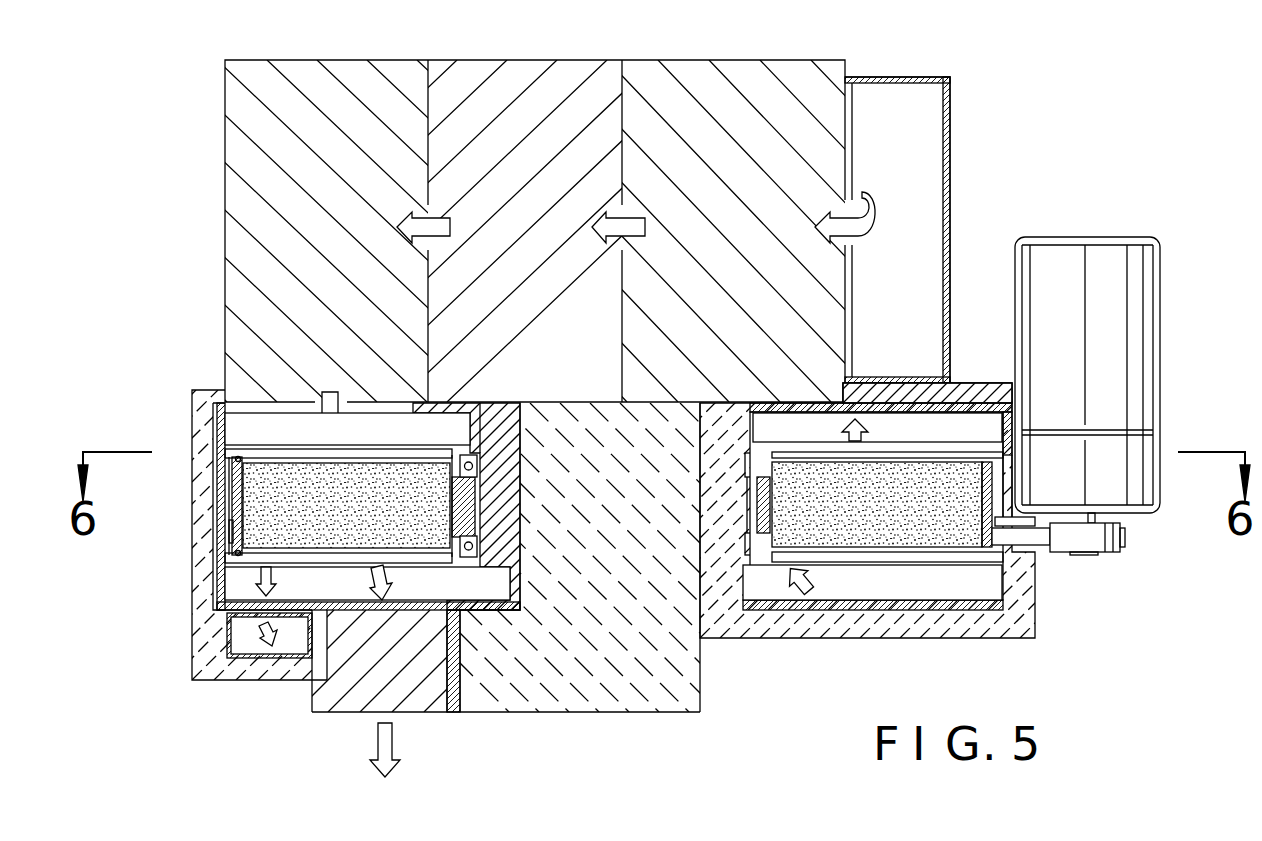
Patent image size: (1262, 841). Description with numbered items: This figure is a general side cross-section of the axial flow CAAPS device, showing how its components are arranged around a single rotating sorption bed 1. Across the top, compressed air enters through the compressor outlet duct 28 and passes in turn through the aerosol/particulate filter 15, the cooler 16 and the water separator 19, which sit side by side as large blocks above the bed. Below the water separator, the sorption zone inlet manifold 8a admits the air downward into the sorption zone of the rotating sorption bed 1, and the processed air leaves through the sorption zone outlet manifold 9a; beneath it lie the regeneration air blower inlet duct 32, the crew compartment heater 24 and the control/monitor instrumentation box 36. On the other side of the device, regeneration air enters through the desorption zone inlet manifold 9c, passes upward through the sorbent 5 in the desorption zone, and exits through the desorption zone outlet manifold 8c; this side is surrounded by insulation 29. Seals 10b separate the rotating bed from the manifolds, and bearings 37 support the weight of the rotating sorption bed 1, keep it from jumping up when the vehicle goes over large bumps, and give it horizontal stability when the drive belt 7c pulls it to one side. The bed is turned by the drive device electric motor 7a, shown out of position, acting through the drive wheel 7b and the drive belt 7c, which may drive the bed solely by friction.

The water separator 19 is at (302, 60).
The cooler 16 is at (494, 60).
The aerosol/particulate filter 15 is at (703, 60).
The compressor outlet duct 28 is at (950, 175).
The drive device electric motor 7a is at (1055, 237).
The drive wheel 7b is at (1055, 553).
The drive belt 7c is at (229, 533).
The sorption zone inlet manifold 8a is at (217, 425).
The desorption zone outlet manifold 8c is at (956, 402).
The seals 10b is at (236, 460).
The rotating sorption bed 1 is at (362, 462).
The sorbent 5 is at (873, 487).
The bearings 37 is at (478, 457).
The sorption zone outlet manifold 9a is at (215, 592).
The desorption zone inlet manifold 9c is at (873, 607).
The regeneration air blower inlet duct 32 is at (228, 632).
The insulation 29 is at (750, 630).
The crew compartment heater 24 is at (418, 714).
The control/monitor instrumentation box 36 is at (512, 707).